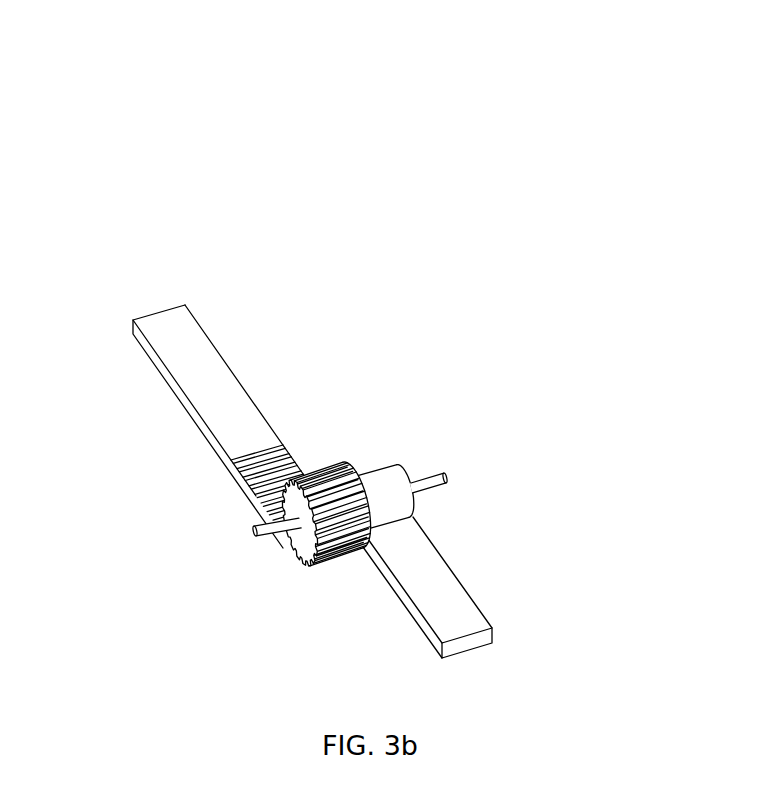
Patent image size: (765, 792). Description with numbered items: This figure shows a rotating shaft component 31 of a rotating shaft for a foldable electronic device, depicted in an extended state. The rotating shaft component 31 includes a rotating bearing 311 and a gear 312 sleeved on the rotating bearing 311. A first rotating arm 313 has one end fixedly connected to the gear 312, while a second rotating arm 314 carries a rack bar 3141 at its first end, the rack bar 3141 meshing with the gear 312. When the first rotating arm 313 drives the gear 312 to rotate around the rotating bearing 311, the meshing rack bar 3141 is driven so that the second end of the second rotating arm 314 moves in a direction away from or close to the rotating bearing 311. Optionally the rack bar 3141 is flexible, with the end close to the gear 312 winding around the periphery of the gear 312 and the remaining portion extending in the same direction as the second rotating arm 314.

The rotating shaft component 31 is at (342, 42).
The rotating bearing 311 is at (440, 468).
The gear 312 is at (328, 493).
The first rotating arm 313 is at (417, 577).
The second rotating arm 314 is at (218, 391).
The rack bar 3141 is at (338, 562).